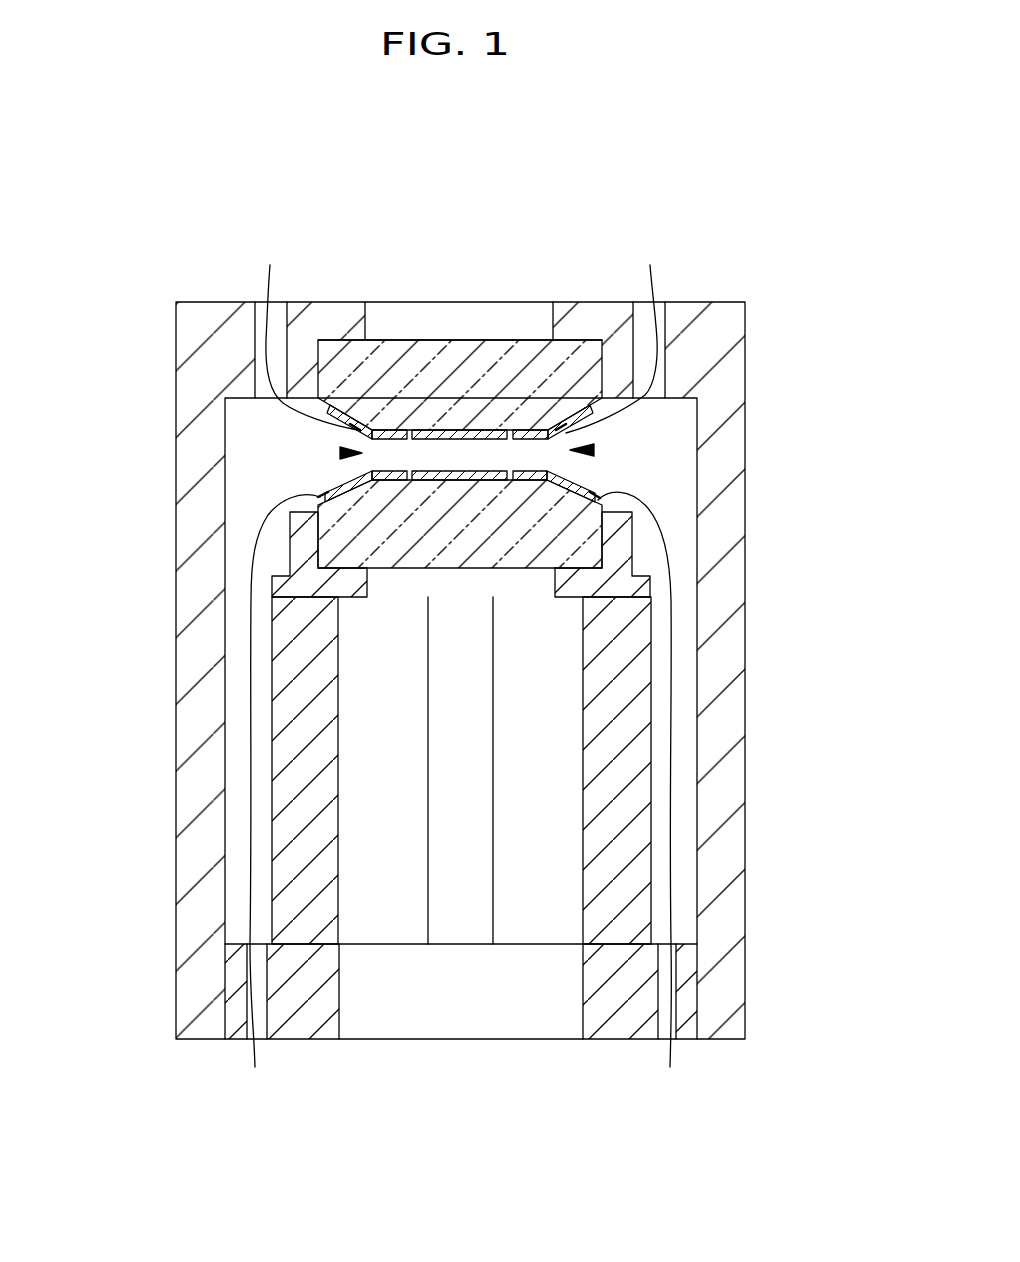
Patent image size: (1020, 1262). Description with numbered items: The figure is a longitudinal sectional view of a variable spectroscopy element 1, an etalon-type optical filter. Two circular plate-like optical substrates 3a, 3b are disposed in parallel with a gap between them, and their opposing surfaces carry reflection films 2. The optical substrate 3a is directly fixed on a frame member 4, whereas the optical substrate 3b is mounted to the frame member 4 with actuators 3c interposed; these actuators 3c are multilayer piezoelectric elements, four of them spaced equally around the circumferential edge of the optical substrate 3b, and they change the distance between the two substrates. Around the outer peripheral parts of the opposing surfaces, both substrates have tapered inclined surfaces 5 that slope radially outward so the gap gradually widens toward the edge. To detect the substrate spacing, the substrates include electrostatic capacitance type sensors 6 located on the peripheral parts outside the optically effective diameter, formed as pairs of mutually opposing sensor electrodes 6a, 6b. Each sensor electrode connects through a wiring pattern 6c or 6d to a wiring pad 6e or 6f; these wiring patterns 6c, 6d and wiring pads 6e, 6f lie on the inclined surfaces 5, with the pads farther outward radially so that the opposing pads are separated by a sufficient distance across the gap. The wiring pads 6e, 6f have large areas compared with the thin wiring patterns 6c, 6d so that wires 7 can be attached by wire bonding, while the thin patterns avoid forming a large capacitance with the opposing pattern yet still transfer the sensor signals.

The variable spectroscopy element 1 is at (770, 184).
The reflection film 2 is at (475, 428).
The optical substrate 3a is at (425, 353).
The optical substrate 3b is at (420, 555).
The actuator 3c is at (485, 732).
The frame member 4 is at (620, 1030).
The inclined surface 5 is at (578, 425).
The sensor 6 is at (340, 454).
The sensor electrode 6a is at (388, 428).
The sensor electrode 6b is at (383, 487).
The wiring pattern 6c is at (362, 436).
The wiring pattern 6d is at (320, 493).
The wiring pad 6e is at (570, 422).
The wiring pad 6f is at (571, 486).
The wire 7 is at (268, 268).